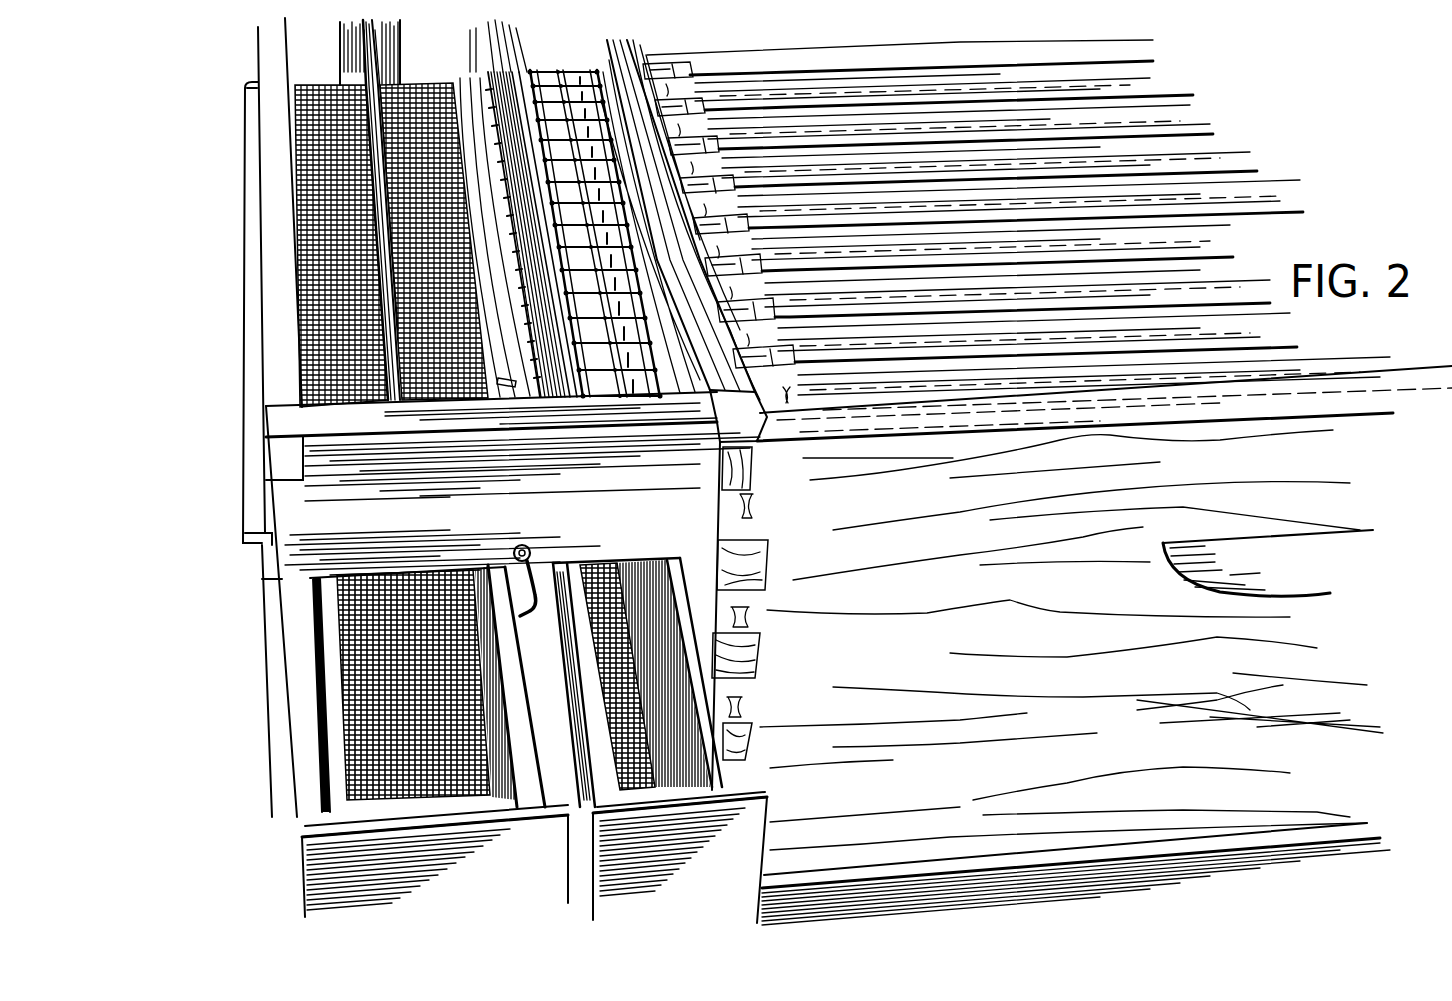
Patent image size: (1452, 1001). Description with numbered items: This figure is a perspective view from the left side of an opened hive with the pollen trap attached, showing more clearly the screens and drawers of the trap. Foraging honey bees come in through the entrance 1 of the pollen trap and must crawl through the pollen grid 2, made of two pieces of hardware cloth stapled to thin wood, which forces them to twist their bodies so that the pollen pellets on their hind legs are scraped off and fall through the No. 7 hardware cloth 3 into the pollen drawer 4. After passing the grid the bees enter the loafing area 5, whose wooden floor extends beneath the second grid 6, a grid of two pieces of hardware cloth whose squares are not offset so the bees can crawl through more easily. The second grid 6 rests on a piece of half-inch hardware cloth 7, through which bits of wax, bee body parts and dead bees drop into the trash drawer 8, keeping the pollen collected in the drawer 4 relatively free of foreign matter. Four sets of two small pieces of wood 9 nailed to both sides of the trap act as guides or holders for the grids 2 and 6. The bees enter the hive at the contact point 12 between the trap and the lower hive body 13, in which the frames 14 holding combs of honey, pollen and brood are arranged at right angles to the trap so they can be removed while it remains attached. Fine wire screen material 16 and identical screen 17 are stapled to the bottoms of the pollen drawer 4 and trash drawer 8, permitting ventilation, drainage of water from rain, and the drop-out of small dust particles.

The entrance to the pollen trap 1 is at (258, 477).
The pollen grid 2 is at (408, 395).
The No. 7 hardware cloth 3 is at (330, 301).
The pollen drawer 4 is at (330, 713).
The loafing area 5 is at (500, 375).
The second grid 6 is at (585, 393).
The half-inch hardware cloth 7 is at (610, 367).
The trash drawer 8 is at (712, 697).
The small pieces of wood 9 is at (401, 42).
The contact point of the trap and lower hive body 12 is at (678, 360).
The lower hive body 13 is at (1066, 558).
The frames 14 is at (1150, 158).
The wire screen material 16 is at (457, 757).
The wire screen material 17 is at (643, 788).